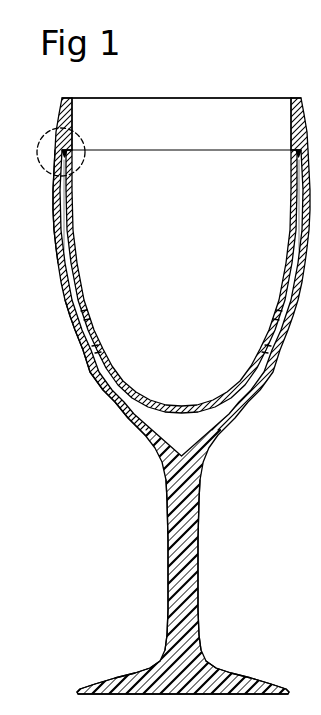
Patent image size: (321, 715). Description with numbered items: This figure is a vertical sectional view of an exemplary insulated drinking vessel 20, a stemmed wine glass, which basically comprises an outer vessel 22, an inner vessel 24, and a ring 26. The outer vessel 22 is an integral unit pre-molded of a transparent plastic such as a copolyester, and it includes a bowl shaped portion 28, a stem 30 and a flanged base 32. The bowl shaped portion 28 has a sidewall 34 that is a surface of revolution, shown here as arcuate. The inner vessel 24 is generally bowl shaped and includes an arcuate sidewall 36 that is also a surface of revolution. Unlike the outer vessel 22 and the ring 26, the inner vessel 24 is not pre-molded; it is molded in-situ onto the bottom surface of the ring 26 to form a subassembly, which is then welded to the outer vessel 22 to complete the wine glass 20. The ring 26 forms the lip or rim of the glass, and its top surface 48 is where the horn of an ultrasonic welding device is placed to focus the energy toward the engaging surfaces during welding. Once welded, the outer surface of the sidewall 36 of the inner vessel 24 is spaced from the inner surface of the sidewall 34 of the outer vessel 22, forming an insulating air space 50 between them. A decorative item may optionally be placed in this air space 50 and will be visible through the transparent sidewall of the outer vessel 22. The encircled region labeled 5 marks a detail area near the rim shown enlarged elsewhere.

The insulated drinking vessel 20 is at (160, 357).
The outer vessel 22 is at (88, 371).
The inner vessel 24 is at (83, 227).
The ring 26 is at (77, 113).
The bowl shaped portion 28 is at (115, 403).
The stem 30 is at (168, 576).
The flanged base 32 is at (107, 681).
The sidewall 34 is at (56, 232).
The sidewall 36 is at (98, 313).
The top surface 48 is at (185, 97).
The insulating air space 50 is at (72, 282).
The seal detail 5 is at (50, 130).